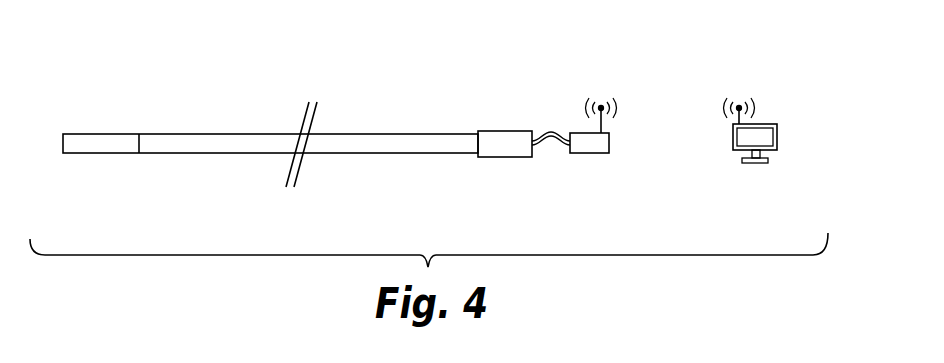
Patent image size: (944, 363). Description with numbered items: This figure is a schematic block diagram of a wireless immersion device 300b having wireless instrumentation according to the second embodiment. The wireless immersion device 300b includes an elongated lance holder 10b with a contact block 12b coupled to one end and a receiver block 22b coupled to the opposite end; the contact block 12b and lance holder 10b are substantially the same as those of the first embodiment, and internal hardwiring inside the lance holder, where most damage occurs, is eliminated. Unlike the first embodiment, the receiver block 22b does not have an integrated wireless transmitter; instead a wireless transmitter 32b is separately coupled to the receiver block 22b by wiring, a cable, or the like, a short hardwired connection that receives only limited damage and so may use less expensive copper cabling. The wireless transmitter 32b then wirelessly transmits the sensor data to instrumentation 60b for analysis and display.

The wireless immersion device 300b is at (242, 66).
The lance holder 10b is at (252, 134).
The contact block 12b is at (98, 135).
The receiver block 22b is at (507, 131).
The wireless transmitter 32b is at (590, 153).
The instrumentation 60b is at (759, 92).